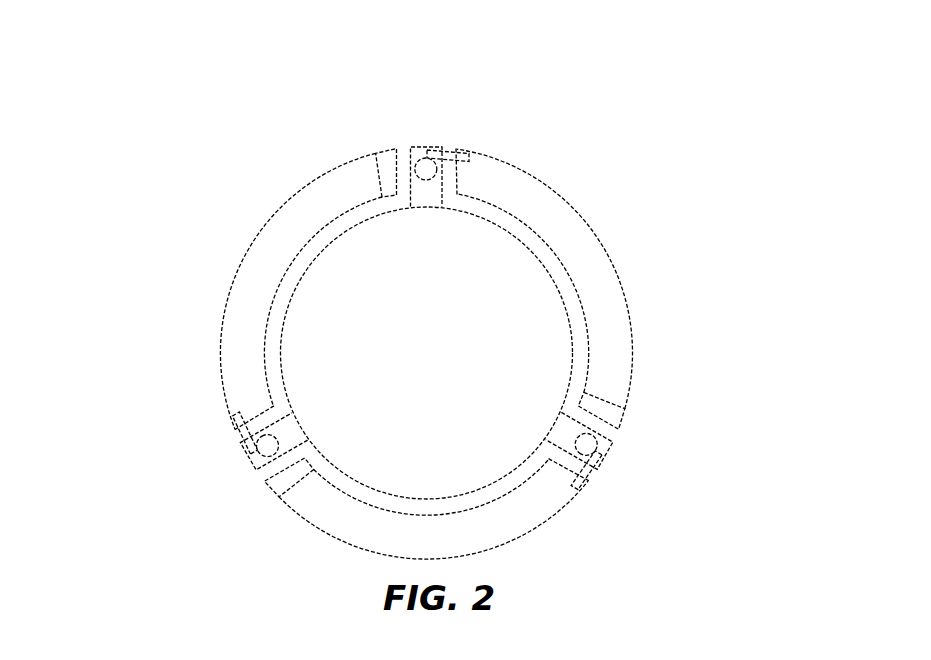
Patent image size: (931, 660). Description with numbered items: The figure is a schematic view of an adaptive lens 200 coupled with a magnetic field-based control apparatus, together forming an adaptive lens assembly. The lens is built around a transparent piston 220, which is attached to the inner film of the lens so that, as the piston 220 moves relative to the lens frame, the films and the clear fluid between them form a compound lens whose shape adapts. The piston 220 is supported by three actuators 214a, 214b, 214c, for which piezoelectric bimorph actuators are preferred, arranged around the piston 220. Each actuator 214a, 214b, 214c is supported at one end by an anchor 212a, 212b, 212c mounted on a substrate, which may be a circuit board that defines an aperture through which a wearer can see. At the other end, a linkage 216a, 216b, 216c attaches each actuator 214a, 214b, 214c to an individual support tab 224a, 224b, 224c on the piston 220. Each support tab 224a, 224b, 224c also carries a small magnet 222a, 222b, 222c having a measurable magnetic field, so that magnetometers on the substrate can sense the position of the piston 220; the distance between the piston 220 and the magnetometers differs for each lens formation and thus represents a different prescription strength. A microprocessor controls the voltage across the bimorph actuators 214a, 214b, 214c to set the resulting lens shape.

The adaptive lens 200 is at (127, 118).
The anchor 212a is at (277, 487).
The anchor 212b is at (613, 415).
The anchor 212c is at (383, 153).
The actuator 214a is at (580, 492).
The actuator 214b is at (540, 195).
The actuator 214c is at (318, 192).
The linkage 216a is at (594, 468).
The linkage 216b is at (452, 158).
The linkage 216c is at (240, 430).
The transparent piston 220 is at (556, 320).
The magnet 222a is at (612, 434).
The magnet 222b is at (423, 157).
The magnet 222c is at (265, 457).
The support tab 224a is at (611, 448).
The support tab 224b is at (443, 150).
The support tab 224c is at (243, 461).